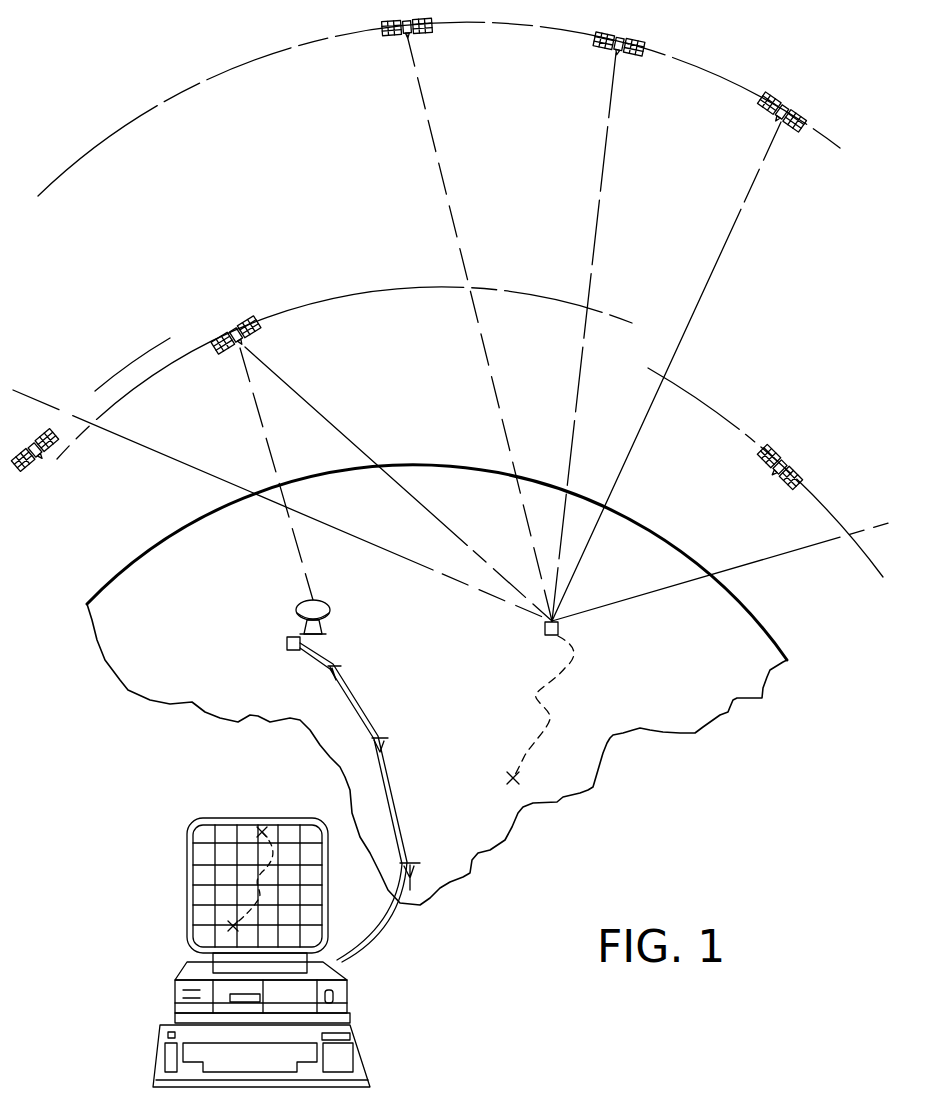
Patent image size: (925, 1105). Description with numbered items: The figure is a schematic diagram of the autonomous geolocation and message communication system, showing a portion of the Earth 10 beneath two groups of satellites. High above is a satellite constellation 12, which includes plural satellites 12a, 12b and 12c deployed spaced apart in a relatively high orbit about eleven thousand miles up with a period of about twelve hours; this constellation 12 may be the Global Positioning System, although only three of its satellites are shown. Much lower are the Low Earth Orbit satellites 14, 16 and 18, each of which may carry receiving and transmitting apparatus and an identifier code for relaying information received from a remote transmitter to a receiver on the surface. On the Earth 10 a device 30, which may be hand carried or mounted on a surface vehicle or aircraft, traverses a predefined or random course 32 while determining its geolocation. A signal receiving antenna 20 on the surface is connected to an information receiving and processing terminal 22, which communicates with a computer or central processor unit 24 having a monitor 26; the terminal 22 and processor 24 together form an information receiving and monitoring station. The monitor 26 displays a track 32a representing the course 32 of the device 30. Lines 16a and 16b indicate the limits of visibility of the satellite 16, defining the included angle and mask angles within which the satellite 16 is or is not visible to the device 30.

The Earth 10 is at (763, 630).
The satellite constellation 12 is at (750, 60).
The satellite 12a is at (422, 34).
The satellite 12b is at (605, 54).
The satellite 12c is at (797, 111).
The LEO satellite 14 is at (772, 447).
The LEO satellite 16 is at (241, 322).
The visibility limit line 16a is at (370, 548).
The visibility limit line 16b is at (625, 603).
The LEO satellite 18 is at (35, 468).
The signal receiving antenna 20 is at (293, 613).
The information receiving and processing terminal 22 is at (285, 647).
The central processor unit 24 is at (347, 1002).
The monitor 26 is at (228, 818).
The device 30 is at (540, 630).
The course 32 is at (541, 693).
The track 32a is at (270, 915).